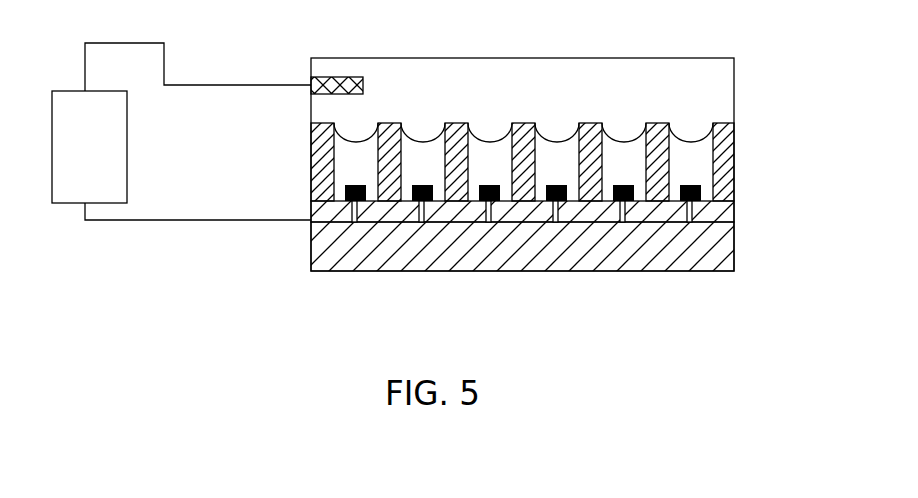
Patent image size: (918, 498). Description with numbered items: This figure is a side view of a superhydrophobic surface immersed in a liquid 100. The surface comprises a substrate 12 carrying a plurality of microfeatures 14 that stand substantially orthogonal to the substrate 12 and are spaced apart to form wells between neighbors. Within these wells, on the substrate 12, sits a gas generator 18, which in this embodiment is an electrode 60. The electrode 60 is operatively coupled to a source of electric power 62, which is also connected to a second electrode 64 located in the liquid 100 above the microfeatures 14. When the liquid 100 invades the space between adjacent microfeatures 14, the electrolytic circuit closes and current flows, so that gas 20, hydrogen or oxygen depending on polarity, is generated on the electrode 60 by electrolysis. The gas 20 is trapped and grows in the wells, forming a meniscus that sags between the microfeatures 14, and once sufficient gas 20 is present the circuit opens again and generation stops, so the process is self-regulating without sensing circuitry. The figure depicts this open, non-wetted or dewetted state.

The liquid 100 is at (720, 77).
The substrate 12 is at (733, 202).
The microfeatures 14 is at (727, 142).
The gas generator 18 is at (355, 171).
The gas 20 is at (697, 165).
The electrode 60 is at (350, 201).
The source of electric power 62 is at (78, 162).
The electrode 64 is at (333, 77).